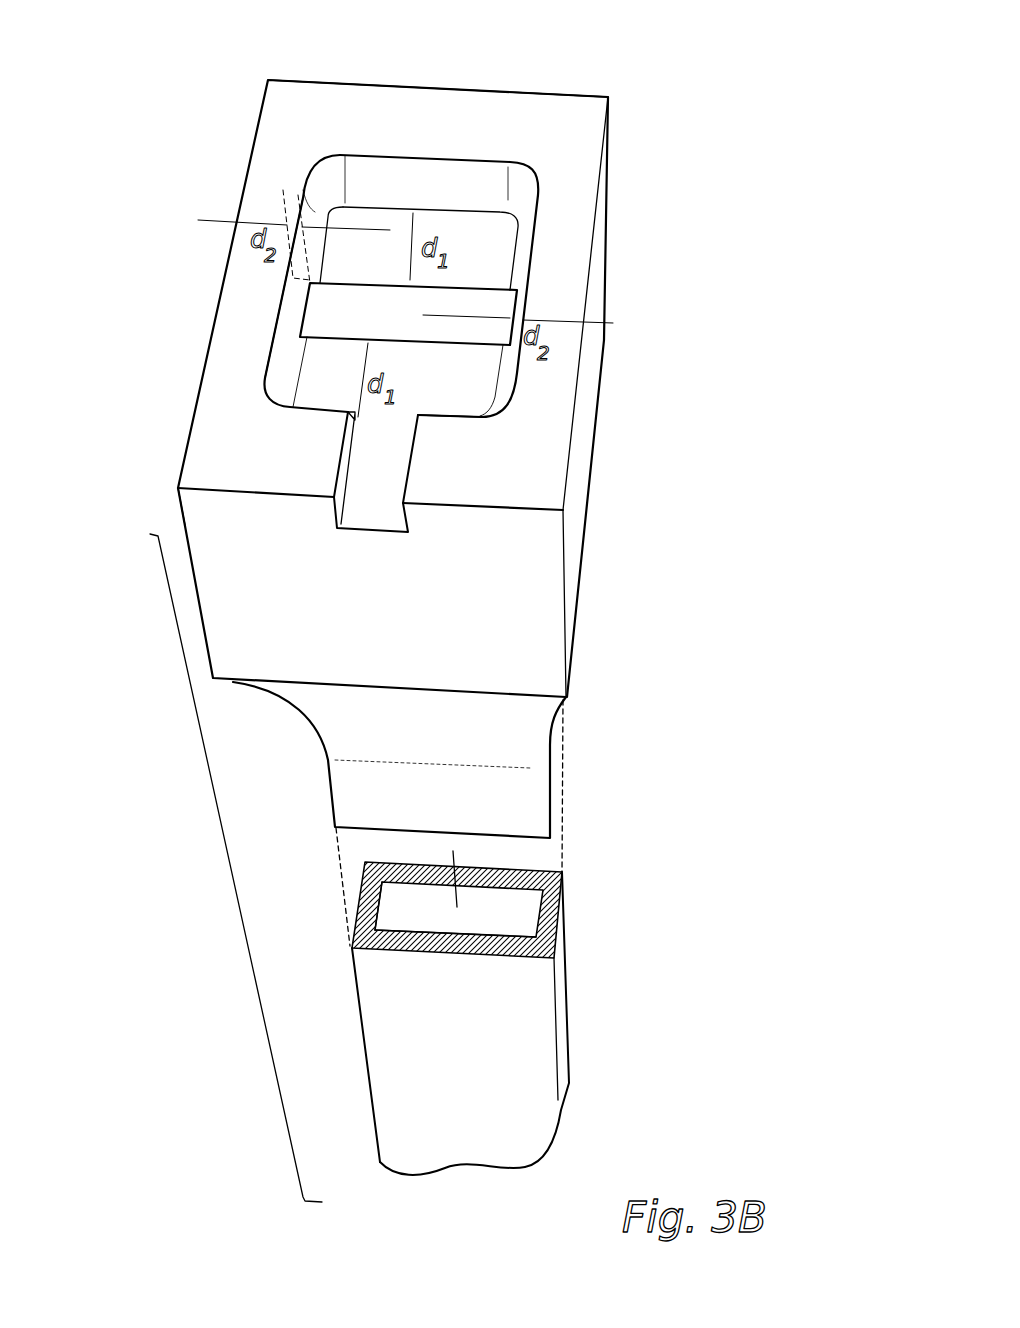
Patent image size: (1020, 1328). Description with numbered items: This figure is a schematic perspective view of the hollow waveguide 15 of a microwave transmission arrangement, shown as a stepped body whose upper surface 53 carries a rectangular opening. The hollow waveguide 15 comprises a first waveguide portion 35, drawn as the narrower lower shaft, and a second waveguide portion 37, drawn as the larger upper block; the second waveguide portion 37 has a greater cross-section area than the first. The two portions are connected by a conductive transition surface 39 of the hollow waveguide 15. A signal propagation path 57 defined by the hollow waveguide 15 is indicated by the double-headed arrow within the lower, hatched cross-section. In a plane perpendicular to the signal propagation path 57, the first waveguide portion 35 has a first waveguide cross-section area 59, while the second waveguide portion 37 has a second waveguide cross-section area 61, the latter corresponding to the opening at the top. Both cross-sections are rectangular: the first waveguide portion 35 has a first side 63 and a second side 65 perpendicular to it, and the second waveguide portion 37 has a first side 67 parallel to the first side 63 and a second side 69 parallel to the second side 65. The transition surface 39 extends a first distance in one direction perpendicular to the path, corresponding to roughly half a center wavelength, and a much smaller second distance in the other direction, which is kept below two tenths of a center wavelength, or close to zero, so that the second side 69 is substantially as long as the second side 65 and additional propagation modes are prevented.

The hollow waveguide 15 is at (612, 571).
The first waveguide portion 35 is at (234, 885).
The second waveguide portion 37 is at (175, 488).
The conductive transition surface 39 is at (485, 236).
The top surface 53 is at (578, 128).
The signal propagation path 57 is at (460, 892).
The first waveguide cross-section area 59 is at (392, 903).
The second waveguide cross-section area 61 is at (458, 222).
The first side 63 is at (376, 927).
The second side 65 is at (450, 937).
The first side 67 is at (276, 374).
The second side 69 is at (448, 414).